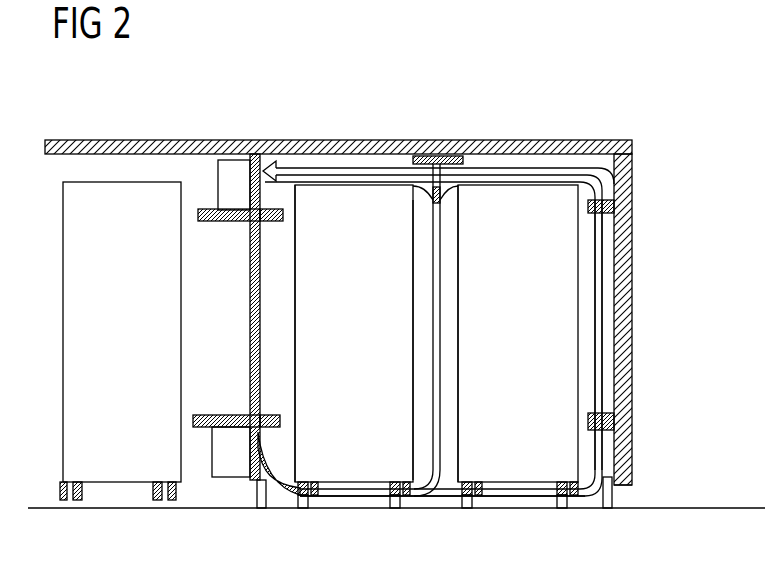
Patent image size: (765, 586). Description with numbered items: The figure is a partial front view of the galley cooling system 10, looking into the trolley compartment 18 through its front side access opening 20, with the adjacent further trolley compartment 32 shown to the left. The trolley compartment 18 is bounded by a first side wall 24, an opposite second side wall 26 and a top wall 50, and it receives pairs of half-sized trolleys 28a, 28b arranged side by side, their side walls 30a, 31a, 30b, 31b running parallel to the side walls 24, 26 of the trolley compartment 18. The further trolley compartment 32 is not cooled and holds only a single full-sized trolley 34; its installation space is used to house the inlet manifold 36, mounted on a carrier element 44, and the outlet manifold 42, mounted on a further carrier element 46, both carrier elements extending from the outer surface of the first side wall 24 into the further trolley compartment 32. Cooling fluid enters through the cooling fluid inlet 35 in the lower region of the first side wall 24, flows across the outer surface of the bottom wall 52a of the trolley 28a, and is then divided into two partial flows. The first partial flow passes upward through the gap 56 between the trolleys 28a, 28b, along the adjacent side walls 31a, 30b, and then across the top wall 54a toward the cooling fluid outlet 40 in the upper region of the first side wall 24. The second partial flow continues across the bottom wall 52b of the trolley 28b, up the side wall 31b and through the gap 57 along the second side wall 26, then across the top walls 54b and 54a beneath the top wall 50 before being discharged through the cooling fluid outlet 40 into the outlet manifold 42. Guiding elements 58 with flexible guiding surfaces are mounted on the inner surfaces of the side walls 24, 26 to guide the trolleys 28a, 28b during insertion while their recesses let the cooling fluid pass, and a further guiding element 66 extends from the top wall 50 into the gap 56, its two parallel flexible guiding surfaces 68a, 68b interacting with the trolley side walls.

The galley cooling system 10 is at (378, 88).
The trolley compartment 18 is at (453, 140).
The front side access opening 20 is at (587, 503).
The first side wall 24 is at (260, 296).
The second side wall 26 is at (630, 462).
The trolley 28a is at (343, 470).
The trolley 28b is at (510, 470).
The side wall of trolley 30a is at (258, 323).
The side wall of trolley 30b is at (458, 360).
The side wall of trolley 31a is at (413, 312).
The side wall of trolley 31b is at (578, 325).
The further trolley compartment 32 is at (133, 138).
The full-sized trolley 34 is at (113, 475).
The cooling fluid inlet 35 is at (295, 444).
The inlet manifold 36 is at (232, 458).
The cooling fluid outlet 40 is at (270, 185).
The outlet manifold 42 is at (233, 170).
The carrier element 44 is at (218, 415).
The further carrier element 46 is at (222, 222).
The top wall 50 is at (418, 155).
The bottom wall of trolley 52a is at (378, 490).
The bottom wall of trolley 52b is at (537, 490).
The top wall of trolley 54a is at (357, 183).
The top wall of trolley 54b is at (535, 185).
The gap 56 is at (445, 433).
The gap 57 is at (632, 260).
The guiding element 58 is at (275, 222).
The further guiding element 66 is at (440, 208).
The guiding surface 68a is at (413, 197).
The guiding surface 68b is at (447, 189).